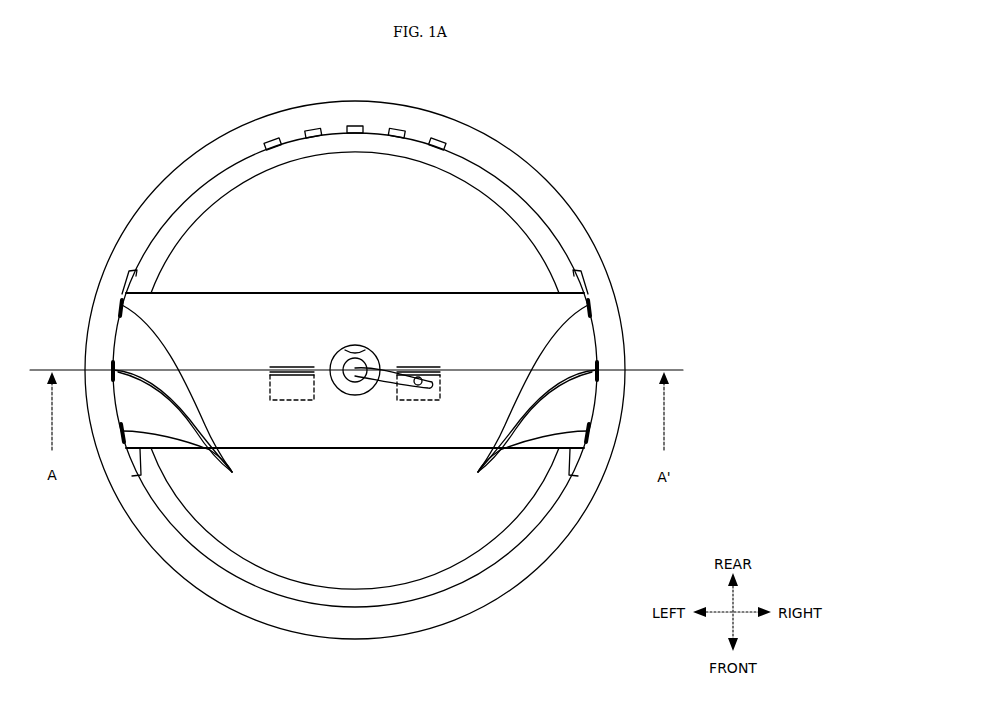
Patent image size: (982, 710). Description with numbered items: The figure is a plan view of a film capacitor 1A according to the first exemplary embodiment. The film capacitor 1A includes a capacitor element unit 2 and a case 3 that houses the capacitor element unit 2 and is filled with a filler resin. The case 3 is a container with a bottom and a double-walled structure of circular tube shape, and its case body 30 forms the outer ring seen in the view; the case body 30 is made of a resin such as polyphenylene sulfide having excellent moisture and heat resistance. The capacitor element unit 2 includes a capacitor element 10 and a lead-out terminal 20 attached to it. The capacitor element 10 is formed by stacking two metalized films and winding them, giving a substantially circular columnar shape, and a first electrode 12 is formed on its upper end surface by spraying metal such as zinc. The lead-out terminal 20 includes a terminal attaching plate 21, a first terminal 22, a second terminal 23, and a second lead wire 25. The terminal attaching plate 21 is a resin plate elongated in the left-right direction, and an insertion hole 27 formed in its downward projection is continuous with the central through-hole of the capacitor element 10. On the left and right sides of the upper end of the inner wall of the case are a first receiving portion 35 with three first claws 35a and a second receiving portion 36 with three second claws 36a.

The film capacitor 1A is at (558, 168).
The capacitor element unit 2 is at (282, 283).
The case 3 is at (605, 258).
The case body 30 is at (625, 342).
The capacitor element 10 is at (500, 528).
The first electrode 12 is at (247, 530).
The lead-out terminal 20 is at (250, 291).
The terminal attaching plate 21 is at (470, 298).
The first terminal 22 is at (297, 365).
The second terminal 23 is at (407, 368).
The insertion hole 27 is at (355, 346).
The second lead wire 25 is at (383, 386).
The first receiving portion 35 is at (130, 476).
The first claws 35a is at (242, 470).
The second receiving portion 36 is at (586, 452).
The second claws 36a is at (467, 471).